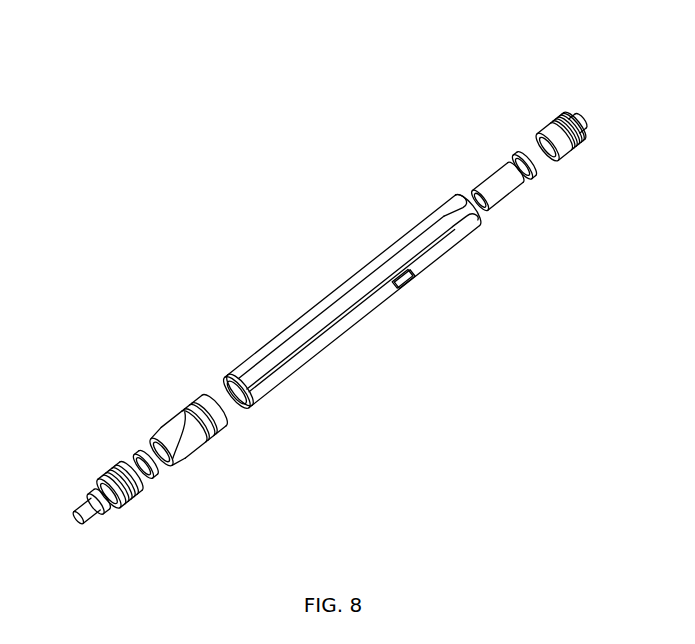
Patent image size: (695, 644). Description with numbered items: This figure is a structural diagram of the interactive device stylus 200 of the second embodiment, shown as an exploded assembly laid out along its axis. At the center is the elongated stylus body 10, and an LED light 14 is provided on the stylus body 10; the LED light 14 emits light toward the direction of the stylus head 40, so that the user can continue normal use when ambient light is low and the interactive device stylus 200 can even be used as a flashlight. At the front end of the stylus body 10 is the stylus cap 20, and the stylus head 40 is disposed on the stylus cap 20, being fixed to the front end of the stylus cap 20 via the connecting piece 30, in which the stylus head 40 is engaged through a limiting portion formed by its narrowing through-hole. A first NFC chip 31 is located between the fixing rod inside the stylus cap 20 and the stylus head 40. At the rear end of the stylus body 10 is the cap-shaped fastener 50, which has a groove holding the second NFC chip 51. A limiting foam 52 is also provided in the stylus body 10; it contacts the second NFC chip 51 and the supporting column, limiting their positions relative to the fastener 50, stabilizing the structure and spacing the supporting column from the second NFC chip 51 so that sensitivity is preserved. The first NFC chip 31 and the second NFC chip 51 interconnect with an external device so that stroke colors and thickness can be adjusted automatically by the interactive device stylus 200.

The interactive device stylus 200 is at (262, 73).
The stylus body 10 is at (377, 301).
The LED light 14 is at (413, 285).
The stylus cap 20 is at (190, 445).
The connecting piece 30 is at (133, 497).
The first NFC chip 31 is at (157, 477).
The stylus head 40 is at (88, 490).
The fastener 50 is at (583, 143).
The second NFC chip 51 is at (537, 173).
The limiting foam 52 is at (503, 193).